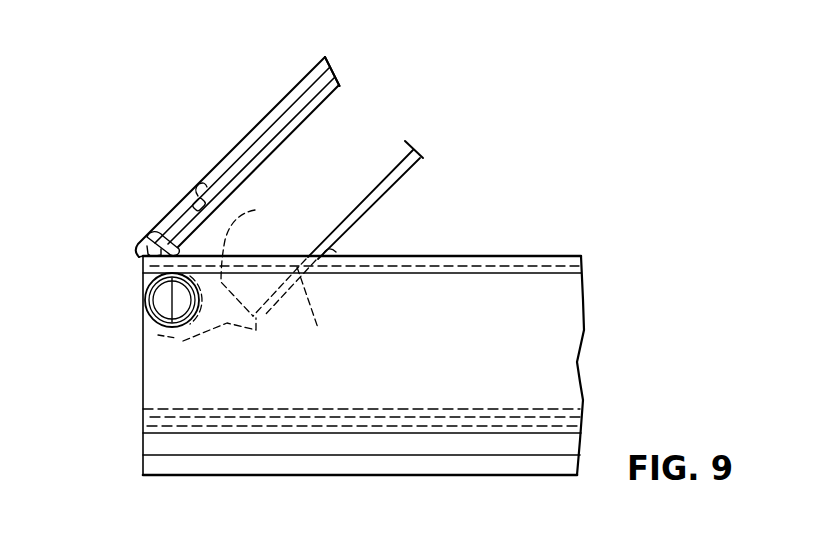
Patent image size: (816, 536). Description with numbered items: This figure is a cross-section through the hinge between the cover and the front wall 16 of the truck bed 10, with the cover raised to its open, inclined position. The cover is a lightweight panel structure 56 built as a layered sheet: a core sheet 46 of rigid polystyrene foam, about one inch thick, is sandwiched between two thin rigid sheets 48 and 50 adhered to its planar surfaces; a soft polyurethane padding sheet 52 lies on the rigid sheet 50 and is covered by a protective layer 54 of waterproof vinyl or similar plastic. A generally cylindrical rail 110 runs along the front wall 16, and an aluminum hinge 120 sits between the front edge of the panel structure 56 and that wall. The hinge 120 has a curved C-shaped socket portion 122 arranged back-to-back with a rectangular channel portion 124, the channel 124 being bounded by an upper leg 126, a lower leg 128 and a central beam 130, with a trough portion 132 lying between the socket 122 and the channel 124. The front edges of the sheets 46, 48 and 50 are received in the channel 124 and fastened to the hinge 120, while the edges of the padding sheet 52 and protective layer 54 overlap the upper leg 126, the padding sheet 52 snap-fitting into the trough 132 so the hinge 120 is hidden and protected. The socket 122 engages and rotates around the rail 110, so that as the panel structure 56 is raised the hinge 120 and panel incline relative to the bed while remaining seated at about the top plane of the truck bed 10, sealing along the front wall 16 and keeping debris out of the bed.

The truck bed 10 is at (520, 244).
The front wall 16 is at (143, 393).
The sheet 46 is at (308, 158).
The sheet of rigid material 48 is at (423, 158).
The sheet of rigid material 50 is at (341, 83).
The padding sheet 52 is at (333, 72).
The protective layer 54 is at (328, 60).
The panel structure 56 is at (425, 2).
The rail 110 is at (160, 294).
The hinge 120 is at (218, 333).
The socket portion 122 is at (188, 327).
The channel portion 124 is at (255, 210).
The upper leg 126 is at (190, 210).
The lower leg 128 is at (318, 330).
The central beam 130 is at (148, 236).
The trough portion 132 is at (140, 250).